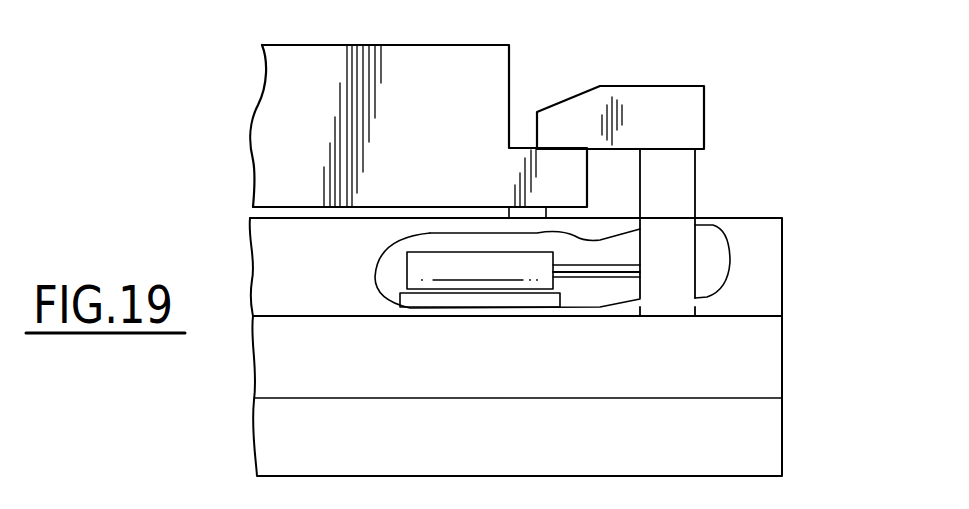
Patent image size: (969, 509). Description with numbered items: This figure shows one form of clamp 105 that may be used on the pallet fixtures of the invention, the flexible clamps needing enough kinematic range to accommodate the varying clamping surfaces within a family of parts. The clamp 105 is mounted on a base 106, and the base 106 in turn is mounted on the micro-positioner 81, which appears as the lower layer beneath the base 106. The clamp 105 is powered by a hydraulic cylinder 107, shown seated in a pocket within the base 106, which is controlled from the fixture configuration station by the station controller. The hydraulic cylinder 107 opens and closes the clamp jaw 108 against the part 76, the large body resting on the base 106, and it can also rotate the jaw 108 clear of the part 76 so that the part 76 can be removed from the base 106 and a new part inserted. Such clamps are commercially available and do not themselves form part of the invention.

The part 76 is at (450, 104).
The micro-positioner 81 is at (758, 348).
The clamp 105 is at (890, 48).
The base 106 is at (770, 242).
The hydraulic cylinder 107 is at (455, 275).
The clamp jaw 108 is at (623, 90).